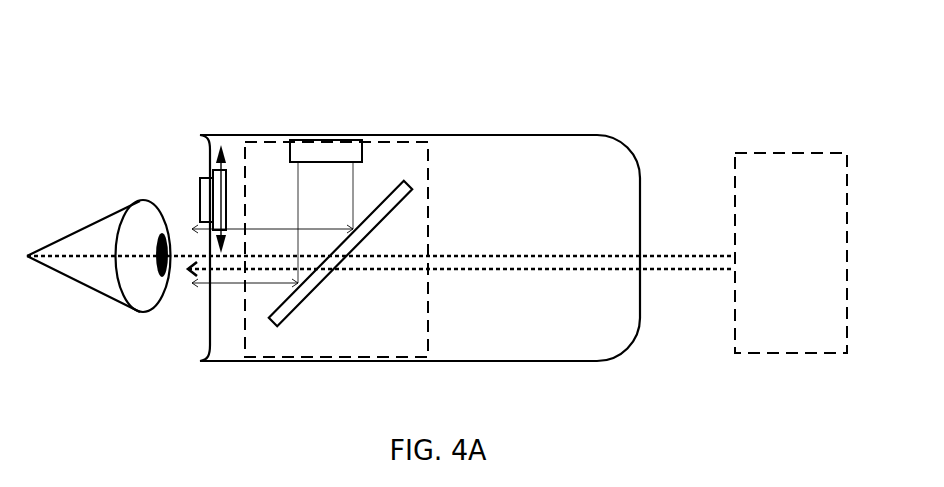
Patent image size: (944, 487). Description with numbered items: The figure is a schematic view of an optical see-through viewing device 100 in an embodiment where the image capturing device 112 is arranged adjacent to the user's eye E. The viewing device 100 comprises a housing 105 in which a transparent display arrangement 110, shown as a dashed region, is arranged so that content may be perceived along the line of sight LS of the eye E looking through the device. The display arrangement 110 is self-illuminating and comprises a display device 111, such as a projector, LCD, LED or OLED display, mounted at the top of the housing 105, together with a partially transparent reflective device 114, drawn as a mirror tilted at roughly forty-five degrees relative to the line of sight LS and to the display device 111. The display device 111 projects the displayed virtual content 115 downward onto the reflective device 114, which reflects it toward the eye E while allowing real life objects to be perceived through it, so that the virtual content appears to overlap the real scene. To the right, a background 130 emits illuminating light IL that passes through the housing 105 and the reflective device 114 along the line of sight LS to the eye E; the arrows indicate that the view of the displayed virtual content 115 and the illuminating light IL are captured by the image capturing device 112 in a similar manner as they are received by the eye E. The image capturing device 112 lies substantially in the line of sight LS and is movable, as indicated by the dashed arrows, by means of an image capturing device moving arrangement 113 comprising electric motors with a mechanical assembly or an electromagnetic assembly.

The viewing device 100 is at (342, 92).
The housing 105 is at (259, 135).
The transparent display arrangement 110 is at (390, 137).
The display device 111 is at (326, 152).
The image capturing device 112 is at (201, 178).
The image capturing device moving arrangement 113 is at (164, 157).
The partially transparent reflective device 114 is at (415, 183).
The displayed virtual content 115 is at (272, 224).
The background 130 is at (791, 253).
The eye E is at (99, 246).
The line of sight LS is at (146, 252).
The illuminating light IL is at (380, 276).